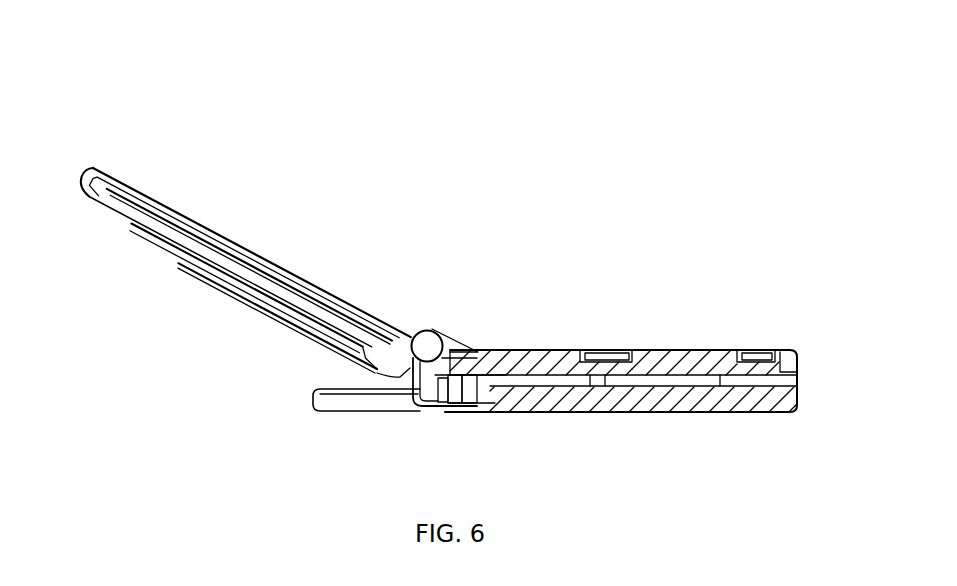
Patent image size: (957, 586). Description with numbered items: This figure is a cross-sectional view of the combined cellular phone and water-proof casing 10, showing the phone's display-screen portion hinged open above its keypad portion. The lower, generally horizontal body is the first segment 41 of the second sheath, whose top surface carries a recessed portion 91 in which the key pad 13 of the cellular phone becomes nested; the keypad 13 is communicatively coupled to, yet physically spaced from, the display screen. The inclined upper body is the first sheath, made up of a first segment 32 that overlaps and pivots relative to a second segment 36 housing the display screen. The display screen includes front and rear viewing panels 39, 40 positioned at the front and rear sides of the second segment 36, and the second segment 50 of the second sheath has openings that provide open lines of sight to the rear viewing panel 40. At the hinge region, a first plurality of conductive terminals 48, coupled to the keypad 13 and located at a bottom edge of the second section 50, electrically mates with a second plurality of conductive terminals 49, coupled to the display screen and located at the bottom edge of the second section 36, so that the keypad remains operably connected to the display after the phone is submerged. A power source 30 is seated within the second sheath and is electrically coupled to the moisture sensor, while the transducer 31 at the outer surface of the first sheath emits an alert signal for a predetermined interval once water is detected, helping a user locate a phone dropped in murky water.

The combined cellular phone and water-proof casing 10 is at (500, 116).
The key pad 13 is at (700, 347).
The power source 30 is at (458, 407).
The transducer 31 is at (136, 180).
The first segment 32 is at (545, 348).
The second segment 36 is at (150, 202).
The front viewing panel 39 is at (207, 270).
The rear viewing panel 40 is at (237, 242).
The first segment 41 is at (700, 405).
The first plurality of conductive terminals 48 is at (403, 400).
The second plurality of conductive terminals 49 is at (407, 387).
The second segment 50 is at (112, 224).
The recessed portion 91 is at (803, 356).